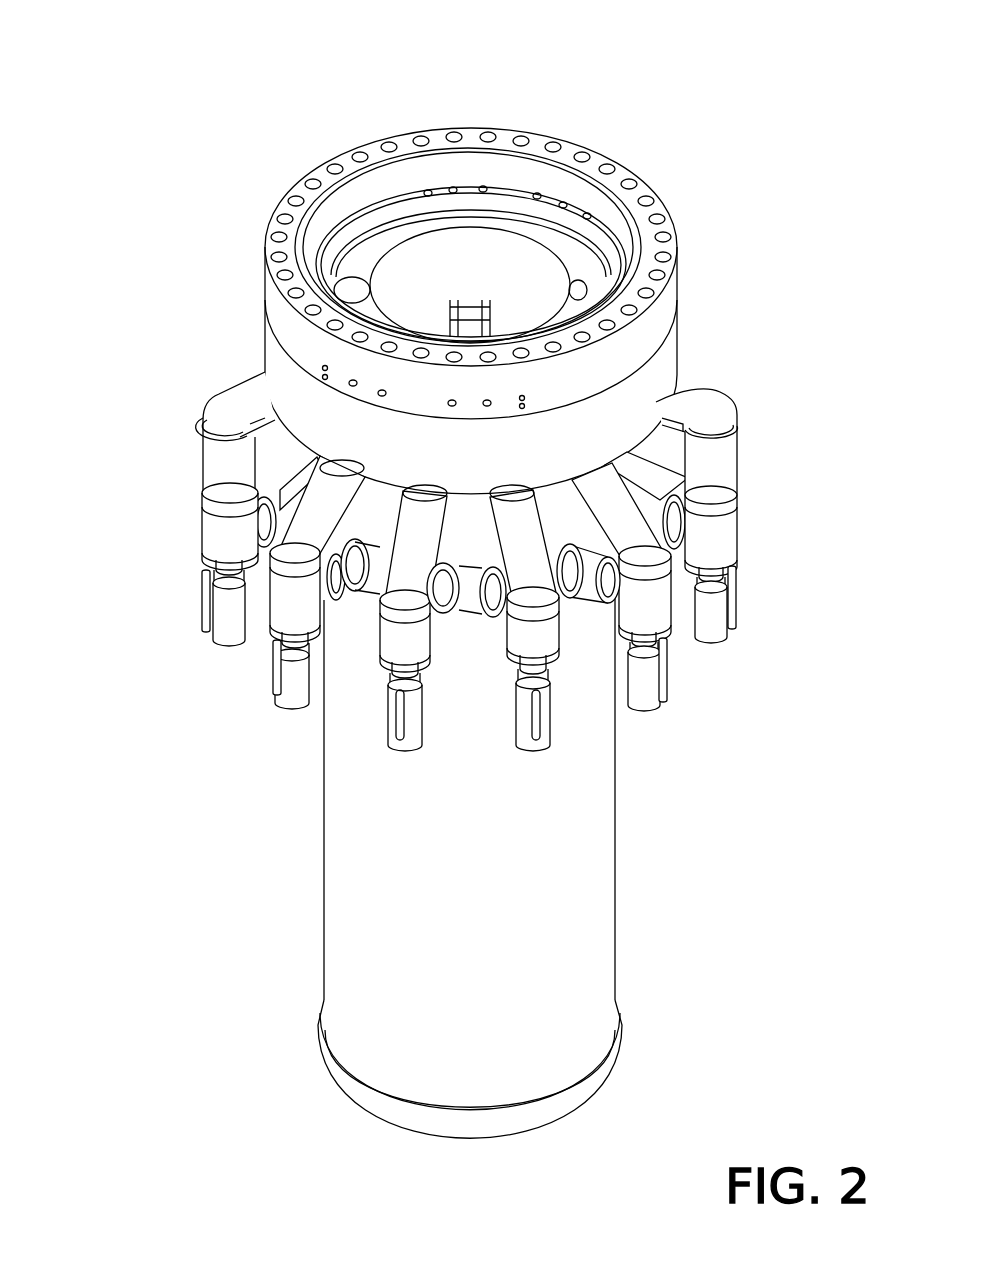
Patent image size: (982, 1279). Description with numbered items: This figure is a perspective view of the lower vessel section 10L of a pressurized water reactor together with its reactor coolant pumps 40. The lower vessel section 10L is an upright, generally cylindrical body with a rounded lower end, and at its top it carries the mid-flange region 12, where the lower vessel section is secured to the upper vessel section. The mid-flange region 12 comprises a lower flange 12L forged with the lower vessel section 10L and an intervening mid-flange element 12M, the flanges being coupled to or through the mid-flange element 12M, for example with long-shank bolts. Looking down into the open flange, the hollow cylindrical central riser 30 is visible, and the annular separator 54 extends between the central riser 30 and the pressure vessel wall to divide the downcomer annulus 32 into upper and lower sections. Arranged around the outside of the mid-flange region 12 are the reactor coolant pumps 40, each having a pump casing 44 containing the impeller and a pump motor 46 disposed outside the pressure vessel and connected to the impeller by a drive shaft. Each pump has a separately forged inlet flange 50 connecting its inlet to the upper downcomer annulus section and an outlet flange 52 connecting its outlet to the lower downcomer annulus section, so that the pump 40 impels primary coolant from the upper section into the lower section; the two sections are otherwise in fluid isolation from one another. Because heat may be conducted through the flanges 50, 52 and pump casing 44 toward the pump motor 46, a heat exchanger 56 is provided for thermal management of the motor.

The lower vessel section 10L is at (370, 922).
The mid-flange region 12 is at (559, 327).
The mid-flange element 12M is at (500, 219).
The lower flange 12L is at (672, 352).
The hollow cylindrical central riser 30 is at (507, 243).
The downcomer annulus 32 is at (308, 370).
The annular separator 54 is at (580, 300).
The reactor coolant pump 40 is at (450, 585).
The pump casing 44 is at (225, 533).
The pump motor 46 is at (227, 617).
The inlet flange 50 is at (240, 473).
The outlet flange 52 is at (363, 600).
The heat exchanger 56 is at (200, 595).